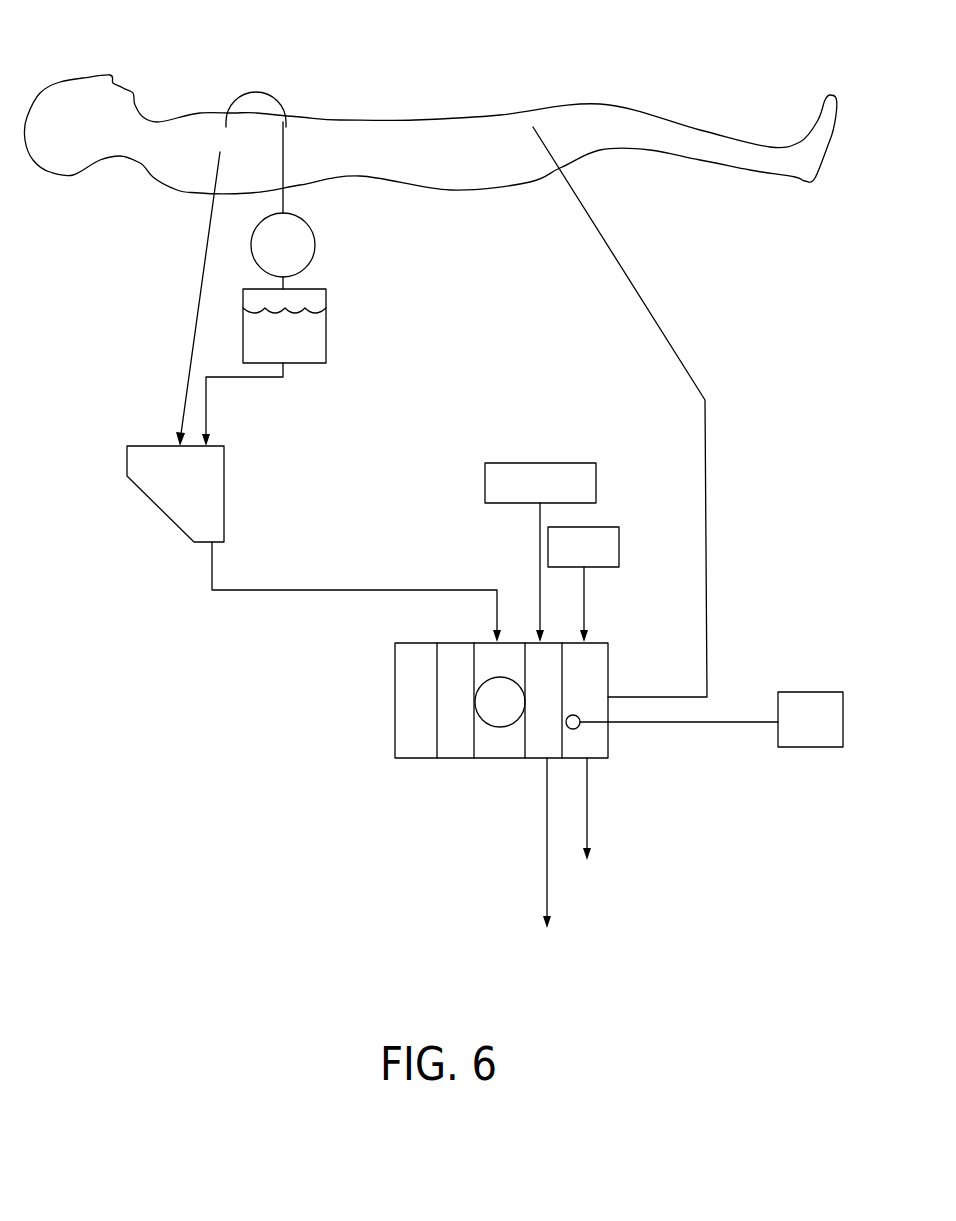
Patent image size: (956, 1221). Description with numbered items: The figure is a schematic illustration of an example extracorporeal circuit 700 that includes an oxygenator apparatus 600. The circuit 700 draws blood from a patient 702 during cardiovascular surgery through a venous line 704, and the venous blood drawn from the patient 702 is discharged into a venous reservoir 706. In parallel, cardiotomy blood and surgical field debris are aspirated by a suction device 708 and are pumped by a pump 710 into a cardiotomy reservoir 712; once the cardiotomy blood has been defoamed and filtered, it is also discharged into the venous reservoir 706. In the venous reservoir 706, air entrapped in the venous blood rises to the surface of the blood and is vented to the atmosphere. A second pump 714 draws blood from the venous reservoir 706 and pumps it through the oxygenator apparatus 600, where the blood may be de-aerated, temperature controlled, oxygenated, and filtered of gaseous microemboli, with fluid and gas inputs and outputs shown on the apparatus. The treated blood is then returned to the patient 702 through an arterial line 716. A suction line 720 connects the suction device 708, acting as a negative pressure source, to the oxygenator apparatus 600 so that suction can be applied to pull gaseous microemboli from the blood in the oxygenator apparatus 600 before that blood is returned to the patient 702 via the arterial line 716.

The oxygenator apparatus 600 is at (603, 763).
The extracorporeal circuit 700 is at (700, 343).
The patient 702 is at (416, 126).
The venous line 704 is at (197, 282).
The venous reservoir 706 is at (137, 472).
The suction device 708 is at (262, 92).
The pump 710 is at (300, 247).
The cardiotomy reservoir 712 is at (312, 341).
The pump 714 is at (488, 712).
The arterial line 716 is at (622, 267).
The suction line 720 is at (728, 723).